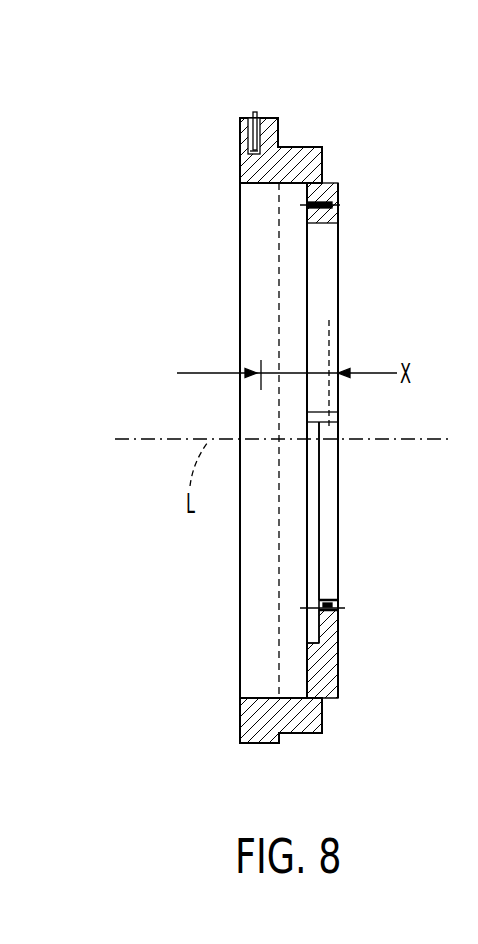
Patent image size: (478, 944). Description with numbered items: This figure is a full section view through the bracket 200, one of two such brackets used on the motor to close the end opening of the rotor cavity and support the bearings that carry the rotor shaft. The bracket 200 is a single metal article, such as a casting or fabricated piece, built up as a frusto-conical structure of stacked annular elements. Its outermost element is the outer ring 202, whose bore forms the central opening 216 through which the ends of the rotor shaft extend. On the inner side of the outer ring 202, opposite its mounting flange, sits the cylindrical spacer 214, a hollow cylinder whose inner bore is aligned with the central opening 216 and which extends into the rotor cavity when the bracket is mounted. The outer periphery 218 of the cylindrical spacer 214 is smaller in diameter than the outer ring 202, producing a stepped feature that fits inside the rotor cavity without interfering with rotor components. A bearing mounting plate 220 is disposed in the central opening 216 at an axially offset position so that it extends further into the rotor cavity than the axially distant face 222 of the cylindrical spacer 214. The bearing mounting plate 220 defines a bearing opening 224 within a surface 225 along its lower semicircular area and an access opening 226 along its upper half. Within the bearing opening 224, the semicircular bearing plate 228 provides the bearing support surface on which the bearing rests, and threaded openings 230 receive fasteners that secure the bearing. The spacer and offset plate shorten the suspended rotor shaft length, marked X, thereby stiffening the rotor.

The bracket 200 is at (432, 54).
The outer ring 202 is at (270, 123).
The cylindrical spacer 214 is at (292, 158).
The central opening 216 is at (392, 495).
The outer periphery 218 is at (363, 787).
The bearing mounting plate 220 is at (372, 613).
The face 222 is at (392, 735).
The bearing opening 224 is at (392, 537).
The surface 225 is at (372, 262).
The access opening 226 is at (387, 309).
The bearing plate 228 is at (372, 462).
The threaded openings 230 is at (372, 583).